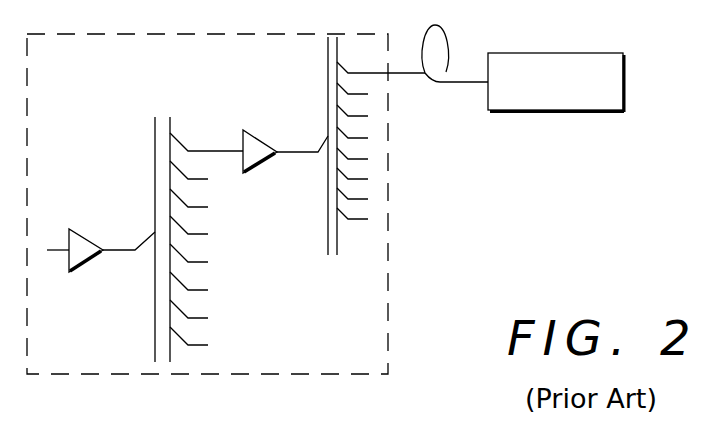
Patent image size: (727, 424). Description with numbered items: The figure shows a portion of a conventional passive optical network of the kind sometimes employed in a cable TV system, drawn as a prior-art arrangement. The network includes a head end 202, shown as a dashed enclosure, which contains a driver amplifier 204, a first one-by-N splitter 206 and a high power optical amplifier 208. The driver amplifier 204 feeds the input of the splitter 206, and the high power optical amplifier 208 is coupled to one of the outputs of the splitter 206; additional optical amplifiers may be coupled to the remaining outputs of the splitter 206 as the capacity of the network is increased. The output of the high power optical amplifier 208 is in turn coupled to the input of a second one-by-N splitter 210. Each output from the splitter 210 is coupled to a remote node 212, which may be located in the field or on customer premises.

The head end 202 is at (390, 221).
The driver amplifier 204 is at (87, 266).
The 1×N splitter 206 is at (155, 160).
The high power optical amplifier 208 is at (251, 170).
The second 1×N splitter 210 is at (328, 97).
The remote node 212 is at (626, 77).